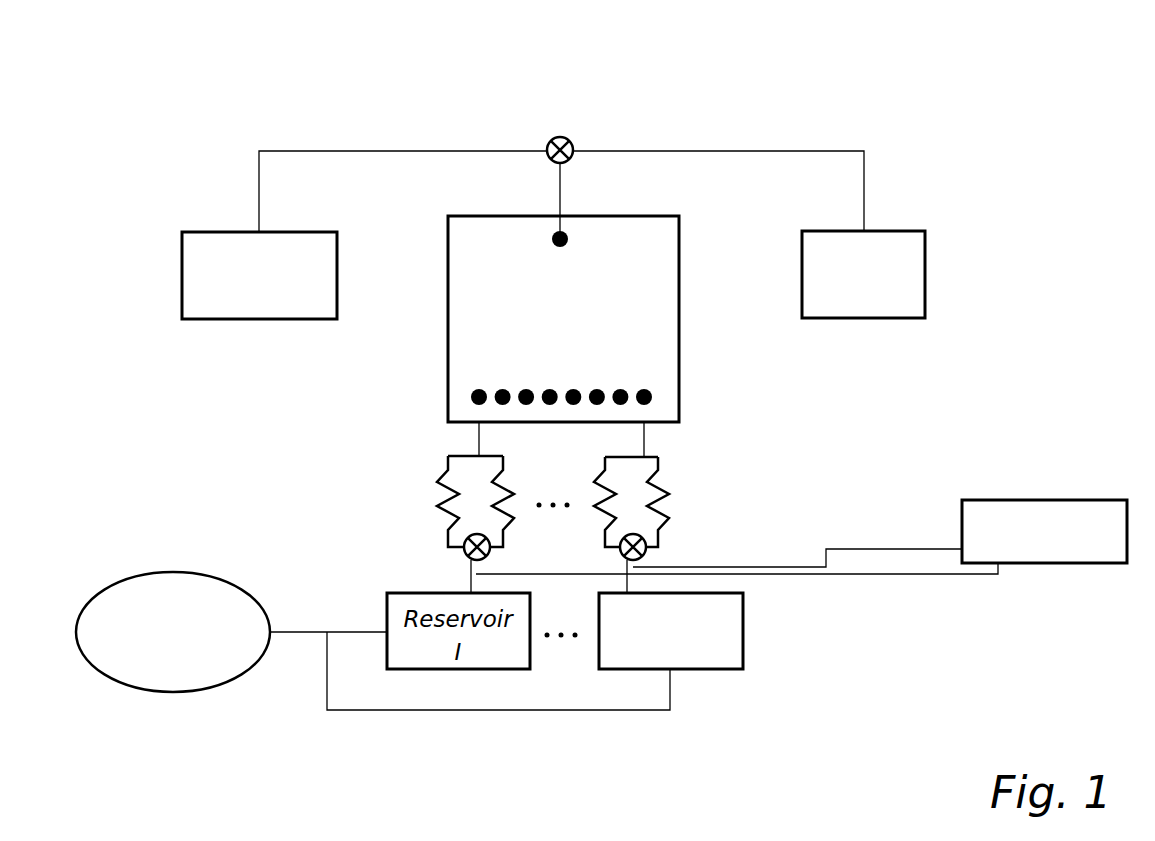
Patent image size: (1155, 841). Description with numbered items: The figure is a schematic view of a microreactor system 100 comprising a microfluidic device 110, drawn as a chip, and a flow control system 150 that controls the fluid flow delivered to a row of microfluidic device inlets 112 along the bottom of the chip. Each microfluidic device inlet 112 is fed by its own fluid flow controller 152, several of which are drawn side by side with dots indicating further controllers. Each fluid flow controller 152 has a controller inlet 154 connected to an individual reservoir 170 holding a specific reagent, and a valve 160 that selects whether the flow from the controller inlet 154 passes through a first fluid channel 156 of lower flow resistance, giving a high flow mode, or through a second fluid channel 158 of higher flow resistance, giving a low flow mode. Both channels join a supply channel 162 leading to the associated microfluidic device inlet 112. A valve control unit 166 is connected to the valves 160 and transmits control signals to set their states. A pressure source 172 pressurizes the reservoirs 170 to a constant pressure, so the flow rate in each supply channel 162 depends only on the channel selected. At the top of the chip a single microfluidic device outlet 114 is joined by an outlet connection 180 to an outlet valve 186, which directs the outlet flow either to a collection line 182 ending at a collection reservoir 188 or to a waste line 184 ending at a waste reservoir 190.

The microreactor system 100 is at (1050, 110).
The microfluidic device 110 is at (653, 250).
The microfluidic device inlet 112 is at (654, 398).
The microfluidic device outlet 114 is at (551, 241).
The flow control system 150 is at (817, 708).
The fluid flow controller 152 is at (625, 480).
The controller inlet 154 is at (632, 588).
The first fluid channel 156 is at (600, 508).
The second fluid channel 158 is at (668, 468).
The valve 160 is at (647, 547).
The supply channel 162 is at (648, 438).
The valve control unit 166 is at (1048, 499).
The reservoir 170 is at (744, 643).
The pressure source 172 is at (230, 572).
The outlet connection 180 is at (562, 205).
The collection line 182 is at (371, 151).
The waste line 184 is at (764, 151).
The outlet valve 186 is at (572, 143).
The collection reservoir 188 is at (198, 232).
The waste reservoir 190 is at (925, 305).